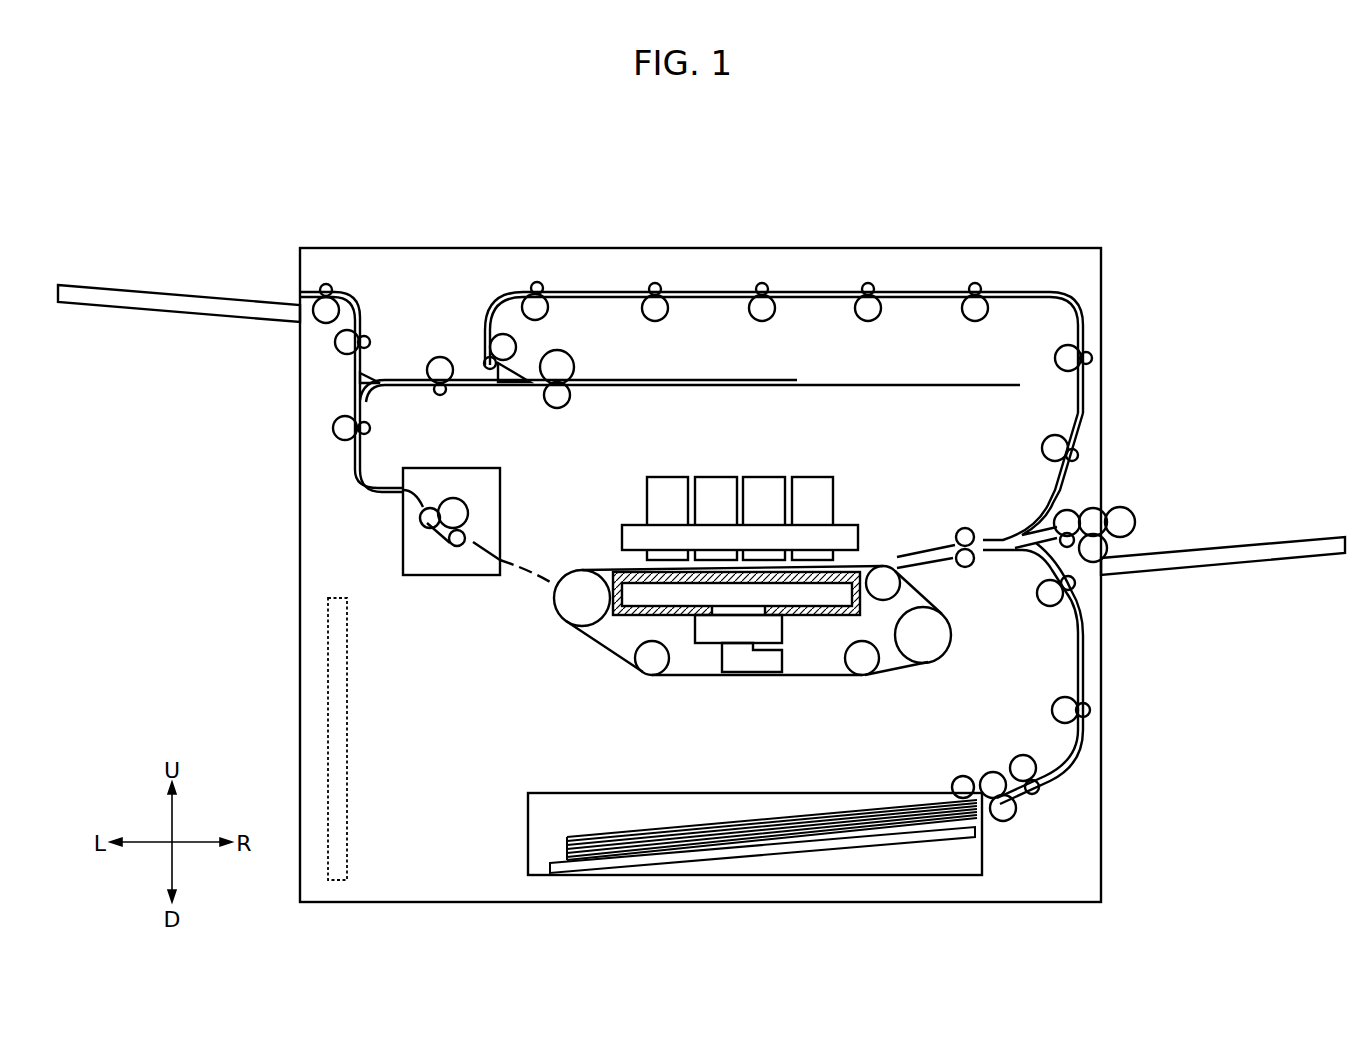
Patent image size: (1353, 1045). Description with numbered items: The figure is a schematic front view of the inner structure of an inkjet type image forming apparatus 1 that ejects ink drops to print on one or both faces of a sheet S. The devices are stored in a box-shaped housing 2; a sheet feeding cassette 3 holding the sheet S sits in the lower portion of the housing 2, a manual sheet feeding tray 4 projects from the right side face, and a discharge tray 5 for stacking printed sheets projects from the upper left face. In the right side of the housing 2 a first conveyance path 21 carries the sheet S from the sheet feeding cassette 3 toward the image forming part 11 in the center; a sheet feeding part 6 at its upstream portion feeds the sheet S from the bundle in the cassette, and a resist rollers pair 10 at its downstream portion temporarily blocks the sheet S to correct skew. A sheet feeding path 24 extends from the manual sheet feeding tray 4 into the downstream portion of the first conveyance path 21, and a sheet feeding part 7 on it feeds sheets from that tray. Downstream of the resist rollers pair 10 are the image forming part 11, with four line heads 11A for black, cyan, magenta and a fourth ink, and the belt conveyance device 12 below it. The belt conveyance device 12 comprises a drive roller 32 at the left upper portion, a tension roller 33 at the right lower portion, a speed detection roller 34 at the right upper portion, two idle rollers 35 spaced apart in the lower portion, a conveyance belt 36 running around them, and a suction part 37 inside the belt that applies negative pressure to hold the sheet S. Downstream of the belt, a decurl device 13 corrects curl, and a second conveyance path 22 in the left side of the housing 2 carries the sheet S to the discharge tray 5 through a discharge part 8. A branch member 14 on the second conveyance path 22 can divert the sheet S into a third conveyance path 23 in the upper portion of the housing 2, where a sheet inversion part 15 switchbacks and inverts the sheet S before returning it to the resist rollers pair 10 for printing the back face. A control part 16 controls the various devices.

The image forming apparatus 1 is at (755, 188).
The housing 2 is at (815, 248).
The sheet feeding cassette 3 is at (528, 818).
The manual sheet feeding tray 4 is at (1253, 545).
The discharge tray 5 is at (127, 288).
The sheet feeding part 6 is at (993, 773).
The sheet feeding part 7 is at (1136, 517).
The discharge part 8 is at (320, 325).
The resist rollers pair 10 is at (965, 527).
The image forming part 11 is at (808, 433).
The line head 11A is at (710, 477).
The belt conveyance device 12 is at (763, 706).
The decurl device 13 is at (437, 577).
The branch member 14 is at (371, 372).
The sheet inversion part 15 is at (574, 361).
The control part 16 is at (348, 738).
The first conveyance path 21 is at (1084, 660).
The second conveyance path 22 is at (352, 465).
The third conveyance path 23 is at (612, 292).
The sheet feeding path 24 is at (1080, 490).
The drive roller 32 is at (554, 610).
The tension roller 33 is at (920, 650).
The speed detection roller 34 is at (883, 566).
The idle roller 35 is at (640, 664).
The conveyance belt 36 is at (807, 677).
The suction part 37 is at (707, 645).
The sheet S is at (633, 832).